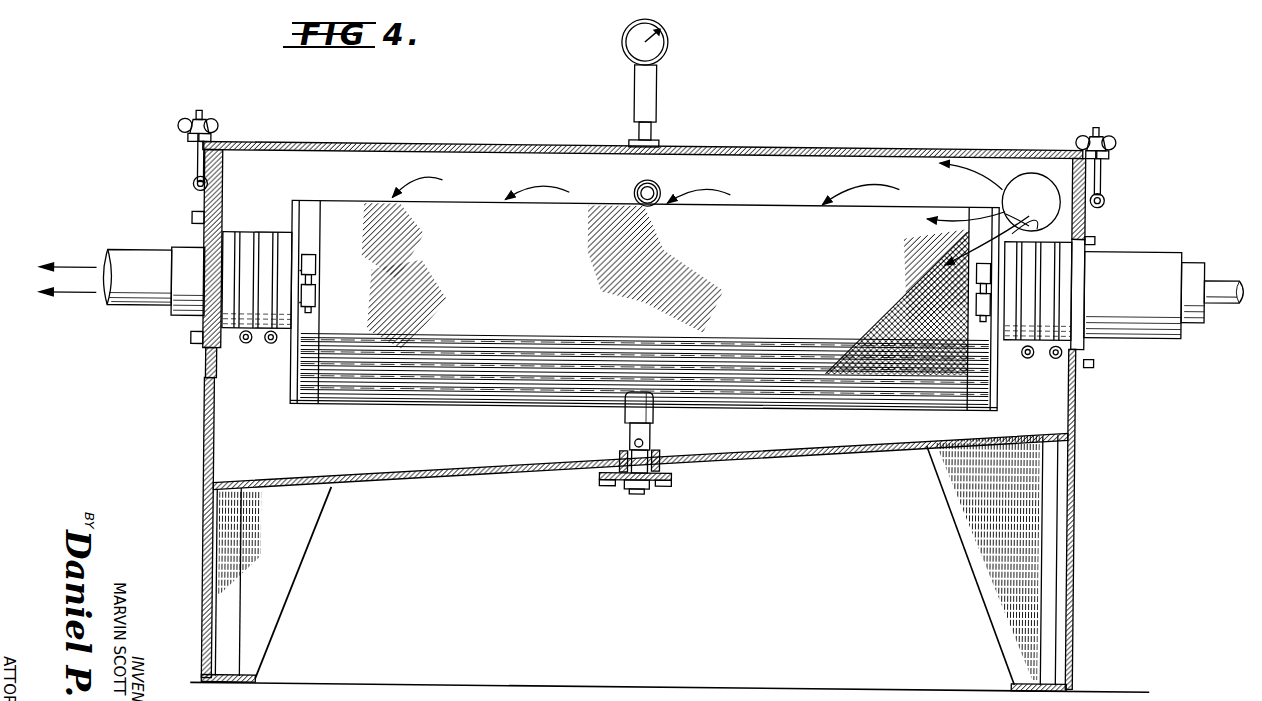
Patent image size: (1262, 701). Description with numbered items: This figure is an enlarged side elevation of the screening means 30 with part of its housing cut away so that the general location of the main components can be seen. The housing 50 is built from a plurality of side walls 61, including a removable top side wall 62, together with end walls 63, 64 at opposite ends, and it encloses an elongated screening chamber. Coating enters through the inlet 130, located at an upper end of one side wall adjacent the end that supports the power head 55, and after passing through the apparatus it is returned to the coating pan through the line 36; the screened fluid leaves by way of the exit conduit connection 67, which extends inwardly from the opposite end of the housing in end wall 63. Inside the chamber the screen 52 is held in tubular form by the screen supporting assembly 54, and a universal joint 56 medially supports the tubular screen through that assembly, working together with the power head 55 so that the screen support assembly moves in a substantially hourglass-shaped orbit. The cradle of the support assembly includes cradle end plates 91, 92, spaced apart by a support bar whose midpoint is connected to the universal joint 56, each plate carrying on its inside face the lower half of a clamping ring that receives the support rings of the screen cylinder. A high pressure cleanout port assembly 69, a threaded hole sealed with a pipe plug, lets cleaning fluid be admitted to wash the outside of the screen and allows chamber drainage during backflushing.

The screening means 30 is at (722, 569).
The line 36 is at (116, 256).
The housing 50 is at (644, 352).
The screen 52 is at (651, 282).
The screen supporting assembly 54 is at (287, 408).
The power head 55 is at (1040, 357).
The universal joint 56 is at (655, 447).
The side walls 61 is at (732, 454).
The removable top side wall 62 is at (320, 146).
The end wall 63 is at (203, 452).
The end wall 64 is at (1083, 420).
The exit conduit connection 67 is at (222, 246).
The high pressure cleanout port assembly 69 is at (655, 187).
The cradle end plate 91 is at (287, 389).
The cradle end plate 92 is at (995, 399).
The inlet 130 is at (1029, 169).